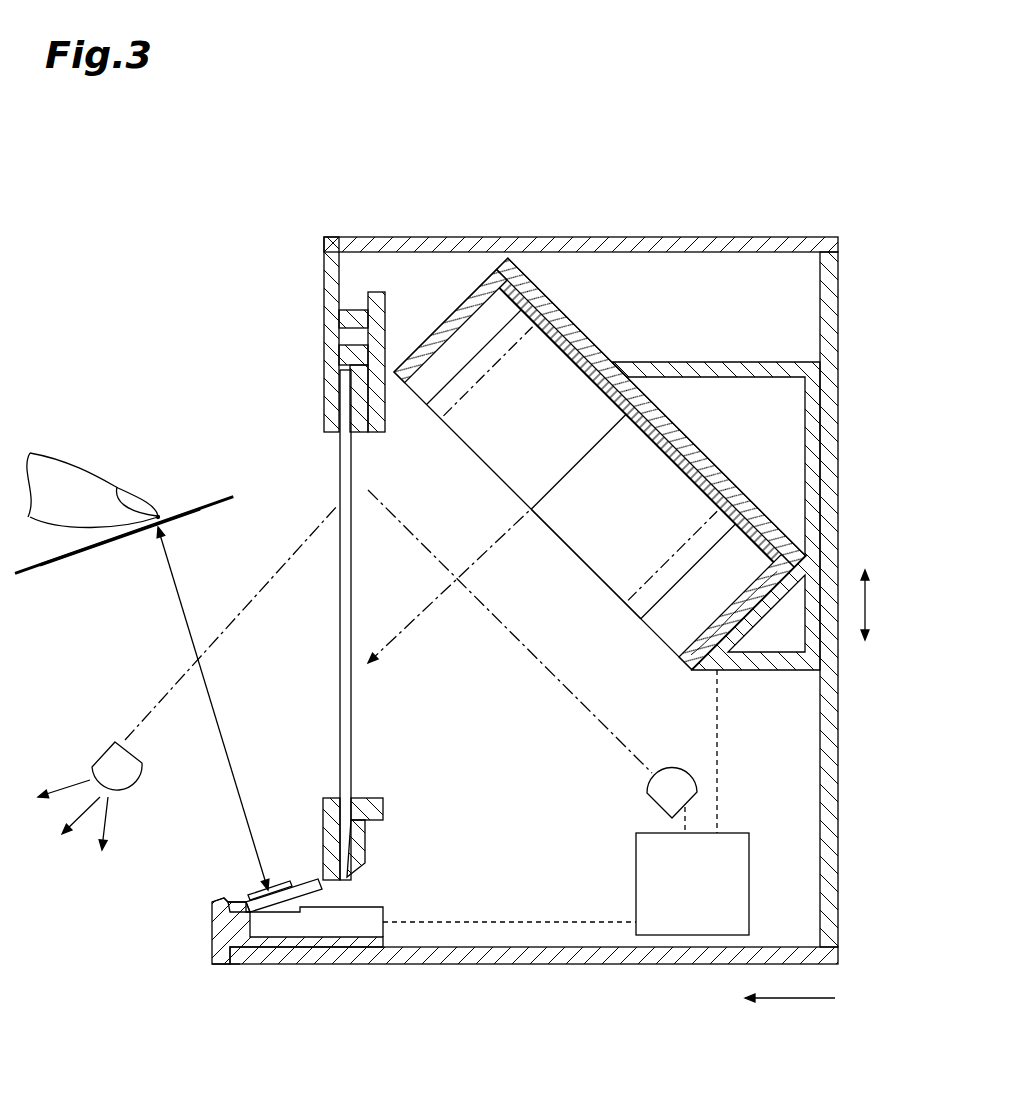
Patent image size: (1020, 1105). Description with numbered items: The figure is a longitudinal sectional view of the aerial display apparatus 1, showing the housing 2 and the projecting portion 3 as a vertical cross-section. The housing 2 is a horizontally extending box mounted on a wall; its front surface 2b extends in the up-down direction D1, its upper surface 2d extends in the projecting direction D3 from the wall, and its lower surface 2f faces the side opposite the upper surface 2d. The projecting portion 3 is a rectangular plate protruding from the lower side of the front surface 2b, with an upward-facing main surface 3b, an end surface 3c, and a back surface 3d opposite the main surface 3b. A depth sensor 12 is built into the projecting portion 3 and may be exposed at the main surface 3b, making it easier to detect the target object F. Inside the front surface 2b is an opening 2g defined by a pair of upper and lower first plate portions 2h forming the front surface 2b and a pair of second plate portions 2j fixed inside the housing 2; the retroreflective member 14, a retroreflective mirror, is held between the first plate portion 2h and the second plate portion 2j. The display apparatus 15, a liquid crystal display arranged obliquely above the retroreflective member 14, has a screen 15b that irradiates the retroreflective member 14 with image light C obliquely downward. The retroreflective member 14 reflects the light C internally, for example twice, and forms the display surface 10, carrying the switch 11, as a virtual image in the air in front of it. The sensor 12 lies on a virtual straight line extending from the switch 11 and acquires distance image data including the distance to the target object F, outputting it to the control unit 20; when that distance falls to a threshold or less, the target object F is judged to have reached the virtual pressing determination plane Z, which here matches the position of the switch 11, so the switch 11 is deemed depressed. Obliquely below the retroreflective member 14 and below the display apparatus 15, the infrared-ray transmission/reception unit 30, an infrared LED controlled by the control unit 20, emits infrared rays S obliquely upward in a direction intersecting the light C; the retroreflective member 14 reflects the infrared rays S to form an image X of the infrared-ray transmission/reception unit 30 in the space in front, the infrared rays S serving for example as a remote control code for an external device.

The aerial display apparatus 1 is at (619, 175).
The housing 2 is at (514, 232).
The front surface 2b is at (324, 326).
The upper surface 2d is at (447, 236).
The lower surface 2f is at (420, 965).
The opening 2g is at (242, 492).
The first plate portion 2h is at (332, 433).
The second plate portion 2j is at (355, 432).
The projecting portion 3 is at (206, 952).
The main surface 3b is at (233, 896).
The end surface 3c is at (218, 903).
The back surface 3d is at (228, 965).
The display surface 10 is at (204, 497).
The switch 11 is at (158, 515).
The sensor 12 is at (272, 905).
The retroreflective member 14 is at (352, 727).
The display apparatus 15 is at (625, 503).
The screen 15b is at (593, 573).
The control unit 20 is at (669, 937).
The infrared-ray transmission/reception unit 30 is at (660, 800).
The target object F is at (75, 488).
The pressing determination plane Z is at (62, 559).
The image of the infrared-ray transmission/reception unit X is at (105, 761).
The light C is at (457, 582).
The infrared rays S is at (574, 699).
The up-down direction D1 is at (887, 605).
The projecting direction D3 is at (769, 998).